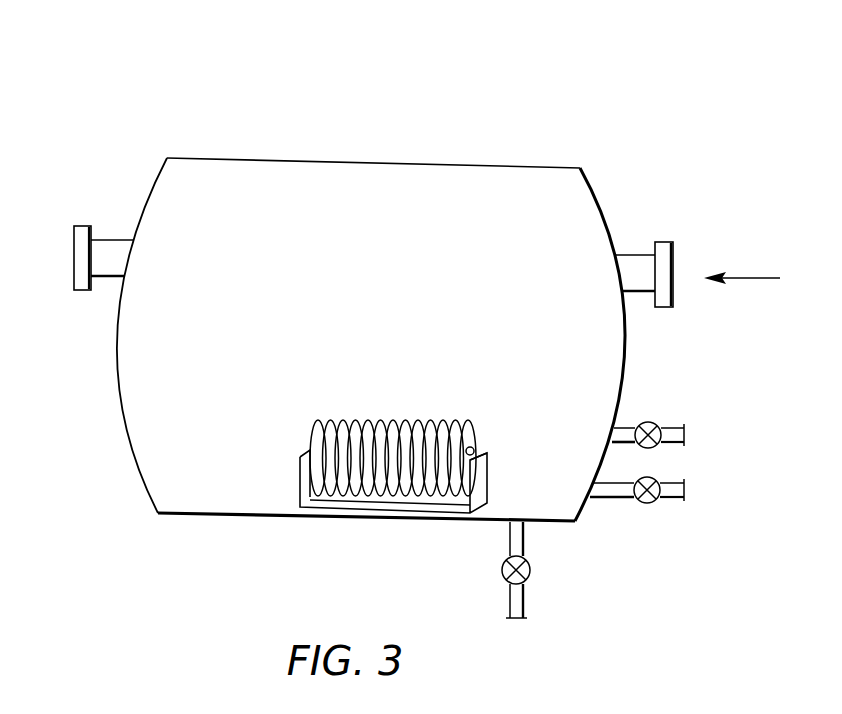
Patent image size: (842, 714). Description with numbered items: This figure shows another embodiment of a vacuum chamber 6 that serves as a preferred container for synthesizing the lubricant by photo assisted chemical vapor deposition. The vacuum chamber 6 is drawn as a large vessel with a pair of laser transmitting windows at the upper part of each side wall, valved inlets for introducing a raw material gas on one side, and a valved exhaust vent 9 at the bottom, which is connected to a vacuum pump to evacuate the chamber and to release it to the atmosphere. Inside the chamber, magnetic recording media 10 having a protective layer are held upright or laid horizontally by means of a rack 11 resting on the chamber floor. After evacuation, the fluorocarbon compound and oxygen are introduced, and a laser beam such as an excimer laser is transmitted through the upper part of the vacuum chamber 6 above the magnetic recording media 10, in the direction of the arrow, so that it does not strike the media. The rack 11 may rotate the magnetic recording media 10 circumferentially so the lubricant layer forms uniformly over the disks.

The vacuum chamber 6 is at (356, 158).
The exhaust vent 9 is at (507, 607).
The magnetic recording media 10 is at (440, 425).
The rack 11 is at (490, 473).